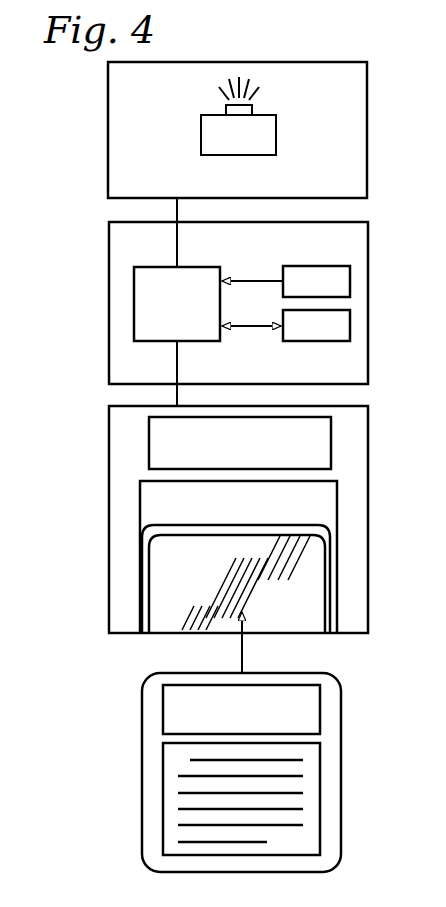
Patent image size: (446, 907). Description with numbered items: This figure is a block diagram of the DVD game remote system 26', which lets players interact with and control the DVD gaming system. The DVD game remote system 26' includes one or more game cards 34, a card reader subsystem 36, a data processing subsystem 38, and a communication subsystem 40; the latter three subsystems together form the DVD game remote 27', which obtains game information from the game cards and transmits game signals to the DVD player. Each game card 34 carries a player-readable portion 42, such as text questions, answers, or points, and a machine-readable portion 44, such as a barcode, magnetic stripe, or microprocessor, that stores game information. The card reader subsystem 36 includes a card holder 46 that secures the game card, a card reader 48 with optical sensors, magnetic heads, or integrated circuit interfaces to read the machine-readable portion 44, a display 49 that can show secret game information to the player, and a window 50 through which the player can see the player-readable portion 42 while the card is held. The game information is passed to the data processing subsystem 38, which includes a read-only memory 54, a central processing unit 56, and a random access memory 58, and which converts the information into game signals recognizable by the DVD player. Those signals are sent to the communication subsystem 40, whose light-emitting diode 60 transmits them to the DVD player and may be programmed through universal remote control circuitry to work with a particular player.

The DVD game remote system 26' is at (56, 67).
The DVD game remote 27' is at (83, 121).
The game card 34 is at (142, 782).
The card reader subsystem 36 is at (109, 450).
The data processing subsystem 38 is at (109, 265).
The communication subsystem 40 is at (108, 152).
The player-readable portion 42 is at (325, 799).
The machine-readable portion 44 is at (325, 710).
The card holder 46 is at (140, 562).
The card reader 48 is at (284, 479).
The display 49 is at (302, 452).
The window 50 is at (302, 572).
The read-only memory (ROM) 54 is at (329, 294).
The central processing unit (CPU) 56 is at (190, 317).
The random access memory (RAM) 58 is at (329, 338).
The light-emitting diode (LED) 60 is at (252, 146).